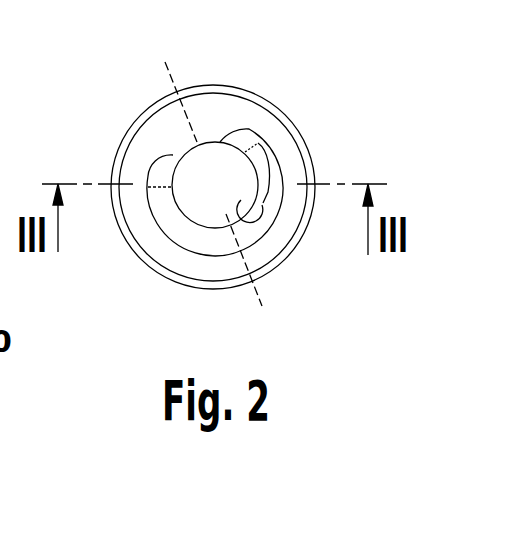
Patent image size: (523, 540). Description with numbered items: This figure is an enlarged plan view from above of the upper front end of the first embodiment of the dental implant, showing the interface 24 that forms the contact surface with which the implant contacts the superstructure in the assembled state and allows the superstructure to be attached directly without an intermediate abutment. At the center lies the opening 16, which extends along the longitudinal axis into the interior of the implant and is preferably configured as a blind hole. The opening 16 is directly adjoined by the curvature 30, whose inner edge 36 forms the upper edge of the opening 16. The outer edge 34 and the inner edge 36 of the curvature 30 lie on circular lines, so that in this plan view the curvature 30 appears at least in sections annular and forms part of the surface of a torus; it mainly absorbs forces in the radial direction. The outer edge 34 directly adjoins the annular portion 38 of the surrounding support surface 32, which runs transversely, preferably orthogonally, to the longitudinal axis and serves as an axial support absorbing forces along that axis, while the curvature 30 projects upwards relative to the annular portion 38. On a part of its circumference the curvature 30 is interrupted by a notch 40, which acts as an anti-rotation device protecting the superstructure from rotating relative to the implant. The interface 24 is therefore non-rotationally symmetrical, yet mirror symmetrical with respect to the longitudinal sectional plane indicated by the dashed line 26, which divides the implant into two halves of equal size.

The opening 16 is at (230, 200).
The interface 24 is at (282, 123).
The dashed line 26 is at (253, 302).
The curvature 30 is at (265, 197).
The support surface 32 is at (243, 92).
The outer edge 34 is at (278, 165).
The inner edge 36 is at (243, 212).
The annular portion 38 is at (162, 245).
The notch 40 is at (199, 142).